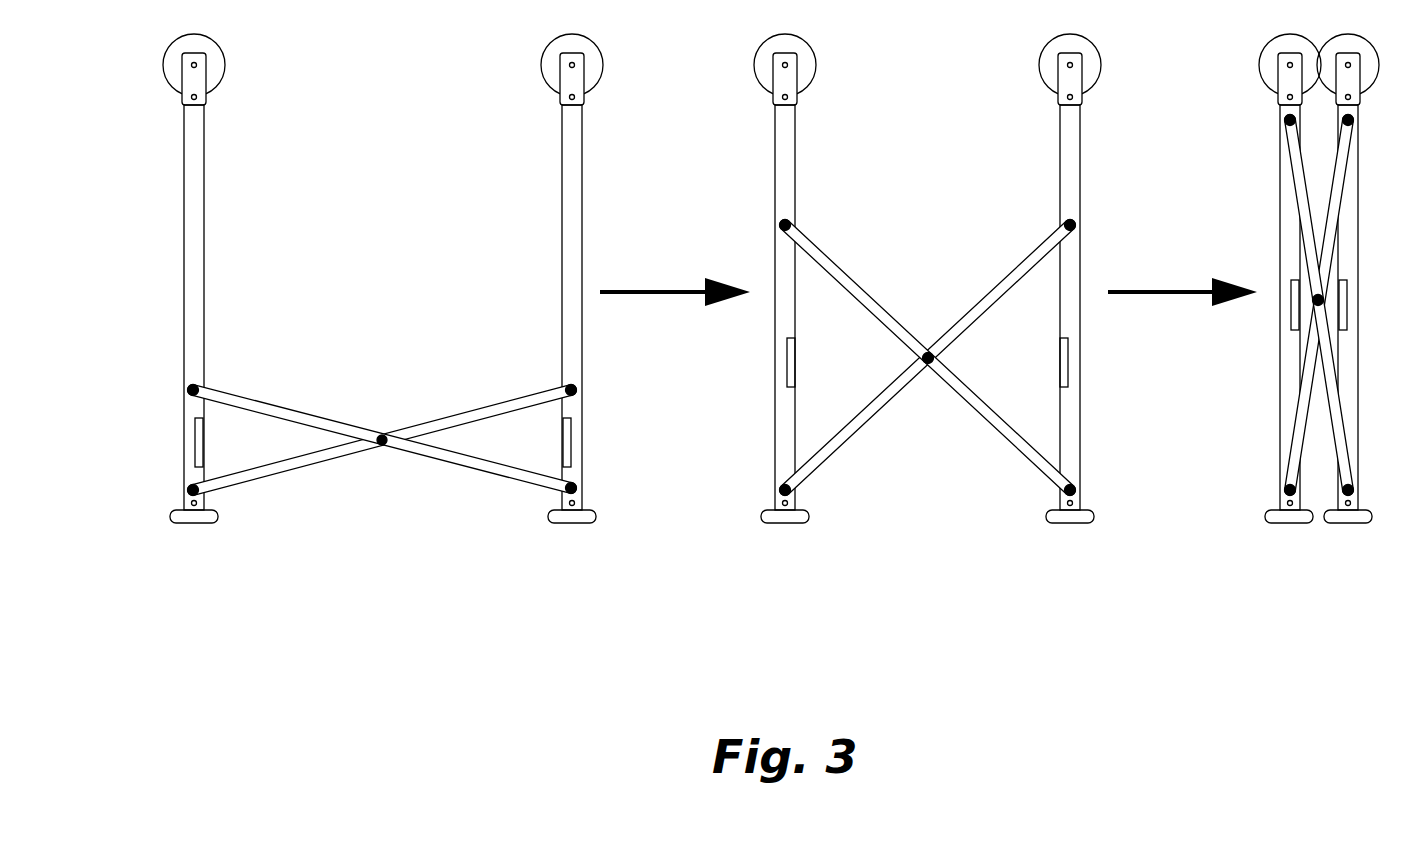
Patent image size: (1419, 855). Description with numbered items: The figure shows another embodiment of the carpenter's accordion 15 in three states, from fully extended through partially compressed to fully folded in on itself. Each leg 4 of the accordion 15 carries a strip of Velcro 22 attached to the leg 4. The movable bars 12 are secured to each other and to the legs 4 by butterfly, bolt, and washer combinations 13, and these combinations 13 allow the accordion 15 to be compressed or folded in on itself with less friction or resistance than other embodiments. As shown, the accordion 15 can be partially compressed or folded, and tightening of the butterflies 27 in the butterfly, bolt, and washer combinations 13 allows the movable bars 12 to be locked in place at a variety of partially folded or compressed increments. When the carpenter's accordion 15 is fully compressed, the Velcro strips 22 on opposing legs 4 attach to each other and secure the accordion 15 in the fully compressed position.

The leg 4 is at (185, 345).
The movable bar 12 is at (272, 408).
The butterfly, bolt, and washer combination 13 is at (378, 432).
The carpenter's accordion 15 is at (750, 370).
The strip of Velcro 22 is at (571, 435).
The butterfly 27 is at (928, 375).